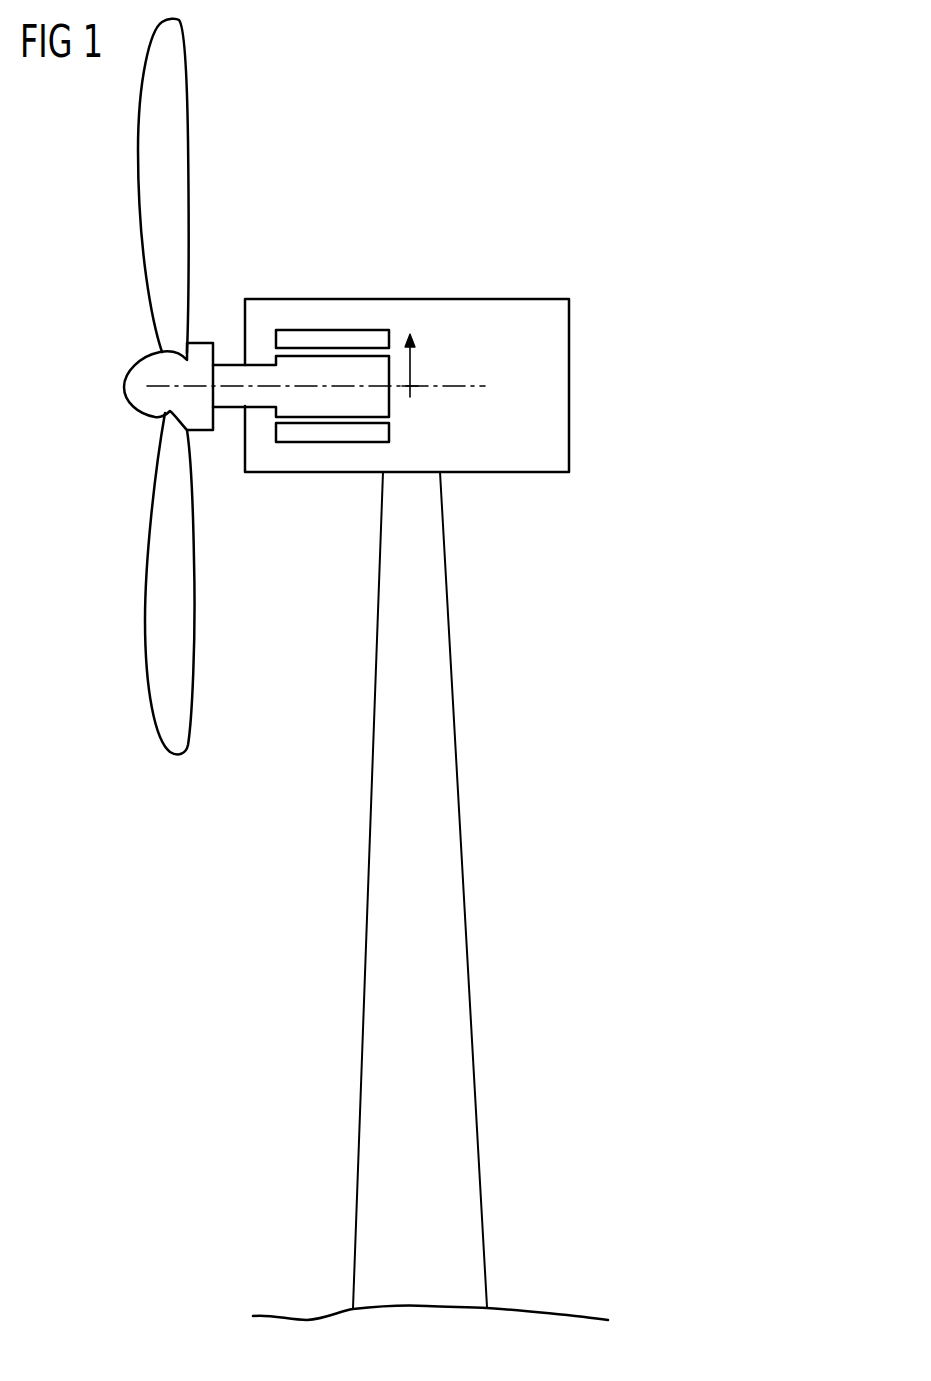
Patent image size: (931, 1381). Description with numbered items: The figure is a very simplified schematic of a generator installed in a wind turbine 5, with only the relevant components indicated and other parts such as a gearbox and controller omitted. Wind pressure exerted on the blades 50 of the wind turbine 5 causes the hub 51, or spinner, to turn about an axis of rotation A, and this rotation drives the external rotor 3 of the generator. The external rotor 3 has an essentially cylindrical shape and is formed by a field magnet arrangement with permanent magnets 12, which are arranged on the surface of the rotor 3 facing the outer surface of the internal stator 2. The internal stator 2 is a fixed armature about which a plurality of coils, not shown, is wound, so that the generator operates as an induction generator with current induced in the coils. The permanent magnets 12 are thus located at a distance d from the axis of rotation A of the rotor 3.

The wind turbine 5 is at (550, 177).
The blades 50 is at (182, 178).
The hub 51 is at (140, 373).
The internal stator 2 is at (337, 403).
The external rotor 3 is at (332, 345).
The permanent magnets 12 is at (330, 338).
The axis of rotation A is at (474, 386).
The distance d is at (415, 368).